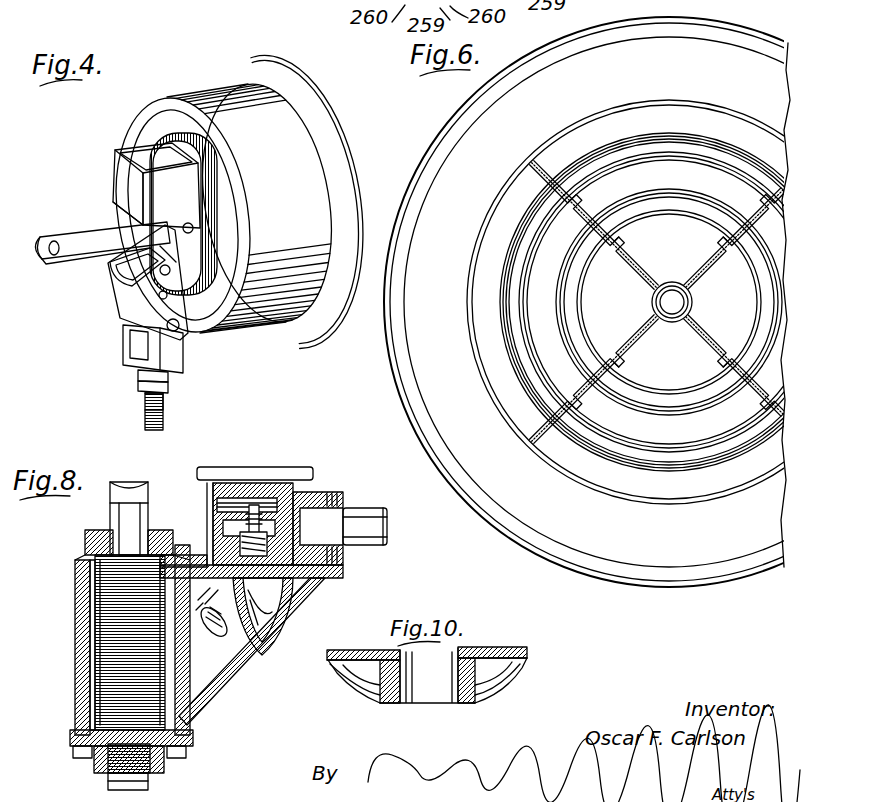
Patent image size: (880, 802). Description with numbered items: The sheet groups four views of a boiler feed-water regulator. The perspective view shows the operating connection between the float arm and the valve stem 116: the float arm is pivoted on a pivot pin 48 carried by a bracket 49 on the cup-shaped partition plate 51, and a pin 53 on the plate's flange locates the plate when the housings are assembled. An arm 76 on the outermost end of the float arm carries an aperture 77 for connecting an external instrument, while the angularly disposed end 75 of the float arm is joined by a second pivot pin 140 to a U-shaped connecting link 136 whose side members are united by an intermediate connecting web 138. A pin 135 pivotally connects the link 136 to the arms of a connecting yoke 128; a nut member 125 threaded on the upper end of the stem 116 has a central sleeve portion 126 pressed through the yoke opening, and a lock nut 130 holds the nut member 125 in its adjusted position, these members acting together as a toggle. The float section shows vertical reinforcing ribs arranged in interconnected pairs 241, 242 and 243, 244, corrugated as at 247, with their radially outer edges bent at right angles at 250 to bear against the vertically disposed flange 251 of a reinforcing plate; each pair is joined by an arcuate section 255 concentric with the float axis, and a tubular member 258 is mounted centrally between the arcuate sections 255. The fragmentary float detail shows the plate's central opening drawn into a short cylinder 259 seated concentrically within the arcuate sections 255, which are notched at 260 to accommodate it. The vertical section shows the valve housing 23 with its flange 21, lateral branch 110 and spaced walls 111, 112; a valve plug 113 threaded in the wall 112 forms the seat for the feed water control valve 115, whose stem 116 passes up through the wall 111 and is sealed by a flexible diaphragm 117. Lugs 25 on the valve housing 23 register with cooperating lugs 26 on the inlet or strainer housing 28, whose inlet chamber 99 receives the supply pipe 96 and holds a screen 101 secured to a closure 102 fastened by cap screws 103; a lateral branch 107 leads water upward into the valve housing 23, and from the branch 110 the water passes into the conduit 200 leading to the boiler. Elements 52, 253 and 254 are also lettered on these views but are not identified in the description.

In FIG. 4, the pin 53 is at (290, 60).
In FIG. 4, the drum body 52 is at (250, 85).
In FIG. 4, the cup-shaped partition plate 51 is at (200, 97).
In FIG. 4, the bracket 49 is at (118, 160).
In FIG. 4, the pivot pin 48 is at (182, 226).
In FIG. 4, the angularly disposed end of the float arm 75 is at (145, 230).
In FIG. 4, the aperture 77 is at (66, 255).
In FIG. 4, the arm 76 is at (66, 262).
In FIG. 4, the second pivot pin 140 is at (133, 280).
In FIG. 4, the intermediate connecting web 138 is at (125, 292).
In FIG. 4, the U-shaped connecting link 136 is at (120, 312).
In FIG. 4, the pin 135 is at (173, 326).
In FIG. 4, the central sleeve portion 126 is at (125, 347).
In FIG. 4, the connecting yoke 128 is at (170, 352).
In FIG. 4, the nut member 125 is at (168, 372).
In FIG. 4, the lock nut 130 is at (165, 386).
In FIG. 4, the valve stem 116 is at (162, 408).
In FIG. 6, the rim 254 is at (742, 30).
In FIG. 6, the flange 253 is at (727, 30).
In FIG. 6, the vertically disposed flange 251 is at (608, 108).
In FIG. 6, the angularly disposed edge 250 is at (533, 160).
In FIG. 6, the corrugations 247 is at (637, 238).
In FIG. 6, the reinforcing rib 243 is at (722, 232).
In FIG. 10, the reinforcing rib 243 is at (490, 690).
In FIG. 6, the tubular member 258 is at (680, 282).
In FIG. 10, the tubular member 258 is at (436, 703).
In FIG. 6, the reinforcing rib 241 is at (632, 262).
In FIG. 10, the reinforcing rib 241 is at (355, 672).
In FIG. 6, the arcuate section 255 is at (652, 303).
In FIG. 10, the arcuate section 255 is at (482, 700).
In FIG. 6, the reinforcing rib 242 is at (598, 360).
In FIG. 6, the reinforcing rib 244 is at (742, 358).
In FIG. 8, the supply pipe 96 is at (110, 508).
In FIG. 8, the flexible diaphragm 117 is at (207, 500).
In FIG. 8, the feed water control valve 115 is at (268, 498).
In FIG. 8, the flange 21 is at (286, 500).
In FIG. 8, the wall 111 is at (330, 494).
In FIG. 8, the lateral branch 110 is at (312, 515).
In FIG. 8, the valve housing 23 is at (66, 608).
In FIG. 8, the lugs 25 is at (228, 548).
In FIG. 8, the conduit 200 is at (370, 548).
In FIG. 8, the inlet or strainer housing 28 is at (64, 632).
In FIG. 8, the inlet chamber 99 is at (88, 656).
In FIG. 8, the screen 101 is at (80, 672).
In FIG. 8, the closure 102 is at (78, 740).
In FIG. 8, the cap screws 103 is at (73, 754).
In FIG. 8, the lugs 26 is at (290, 578).
In FIG. 8, the valve plug 113 is at (270, 608).
In FIG. 8, the wall 112 is at (262, 628).
In FIG. 8, the lateral branch 107 is at (220, 672).
In FIG. 10, the short cylinder 259 is at (470, 655).
In FIG. 10, the notches 260 is at (482, 680).